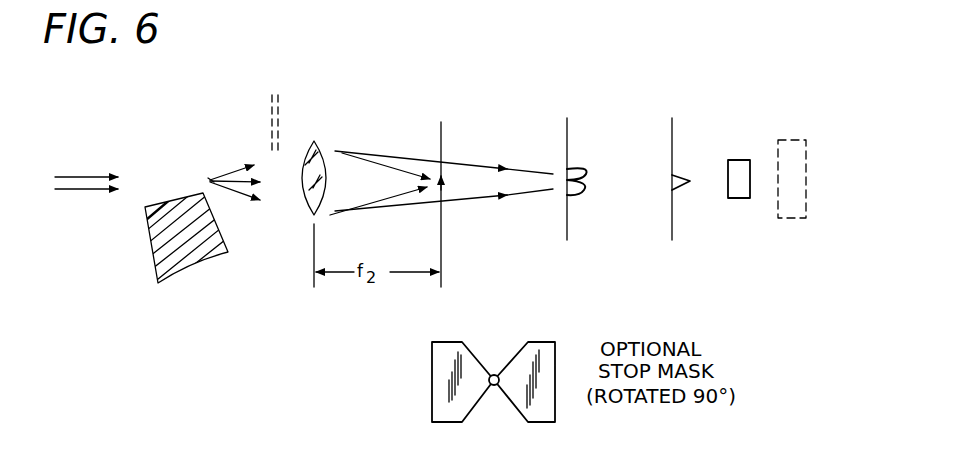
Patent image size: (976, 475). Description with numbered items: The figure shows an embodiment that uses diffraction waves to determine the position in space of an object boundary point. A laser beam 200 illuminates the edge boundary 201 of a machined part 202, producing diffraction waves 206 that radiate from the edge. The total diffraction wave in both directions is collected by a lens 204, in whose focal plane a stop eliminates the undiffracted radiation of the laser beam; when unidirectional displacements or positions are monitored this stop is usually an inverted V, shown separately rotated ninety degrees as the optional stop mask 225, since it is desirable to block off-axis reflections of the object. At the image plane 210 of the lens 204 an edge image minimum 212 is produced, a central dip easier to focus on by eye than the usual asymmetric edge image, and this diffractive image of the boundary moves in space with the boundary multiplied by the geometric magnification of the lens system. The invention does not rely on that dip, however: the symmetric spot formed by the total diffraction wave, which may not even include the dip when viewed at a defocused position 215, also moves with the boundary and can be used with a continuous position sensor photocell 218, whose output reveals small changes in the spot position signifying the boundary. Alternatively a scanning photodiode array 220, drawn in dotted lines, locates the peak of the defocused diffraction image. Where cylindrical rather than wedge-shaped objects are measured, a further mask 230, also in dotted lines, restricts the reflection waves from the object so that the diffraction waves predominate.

The laser beam 200 is at (78, 190).
The edge boundary 201 is at (208, 172).
The machined part 202 is at (200, 258).
The lens 204 is at (314, 140).
The scattered light rays 206 is at (222, 172).
The image plane 210 is at (592, 168).
The edge image minimum 212 is at (572, 170).
The defocused position 215 is at (696, 167).
The continuous position sensor photocell 218 is at (738, 161).
The scanning photodiode array 220 is at (796, 196).
The inverted V stop 225 is at (441, 124).
The mask 230 is at (279, 118).